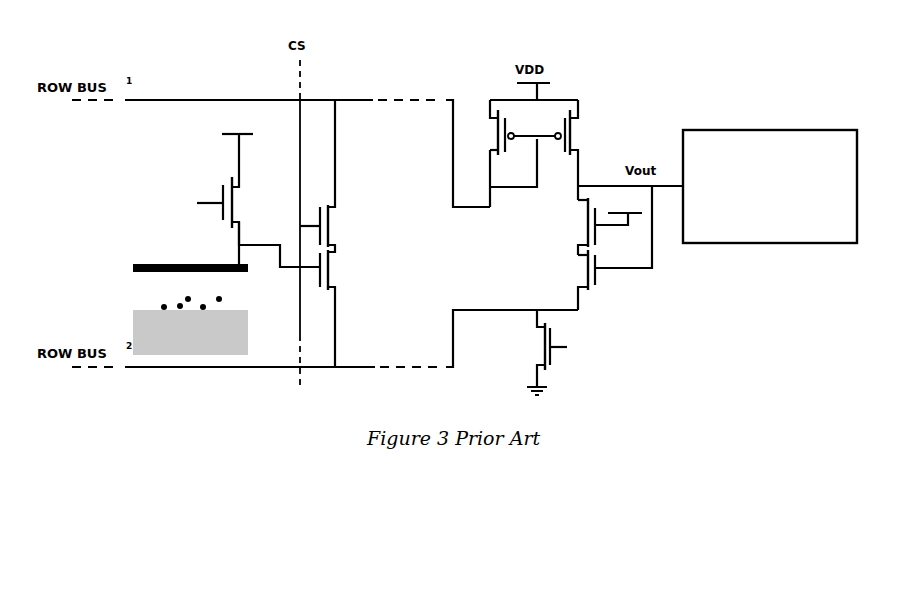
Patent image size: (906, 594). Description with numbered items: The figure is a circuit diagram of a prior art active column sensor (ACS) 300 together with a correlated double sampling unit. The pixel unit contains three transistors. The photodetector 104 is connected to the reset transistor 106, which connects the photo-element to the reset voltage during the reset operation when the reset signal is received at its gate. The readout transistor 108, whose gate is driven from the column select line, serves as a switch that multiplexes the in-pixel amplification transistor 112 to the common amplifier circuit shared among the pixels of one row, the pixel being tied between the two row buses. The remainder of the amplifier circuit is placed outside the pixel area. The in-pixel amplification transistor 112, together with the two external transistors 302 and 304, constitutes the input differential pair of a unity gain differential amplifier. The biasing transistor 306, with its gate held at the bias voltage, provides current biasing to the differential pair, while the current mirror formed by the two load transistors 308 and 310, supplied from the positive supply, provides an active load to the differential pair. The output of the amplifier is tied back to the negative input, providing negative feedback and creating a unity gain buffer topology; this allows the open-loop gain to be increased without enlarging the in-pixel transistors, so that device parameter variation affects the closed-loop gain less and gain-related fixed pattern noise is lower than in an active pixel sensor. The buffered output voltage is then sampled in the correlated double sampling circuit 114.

The photodetector 104 is at (135, 290).
The reset transistor Q1 106 is at (222, 183).
The transistor Q2 108 is at (348, 203).
The in-pixel amplification transistor Q3 112 is at (344, 286).
The correlated double sampling (CDS) circuit 114 is at (815, 128).
The active column sensor (ACS) schematic 300 is at (182, 508).
The transistor Q4 302 is at (572, 212).
The transistor Q5 304 is at (578, 278).
The transistor Q8 306 is at (562, 357).
The current mirror transistor Q6 308 is at (477, 110).
The current mirror transistor Q7 310 is at (598, 117).